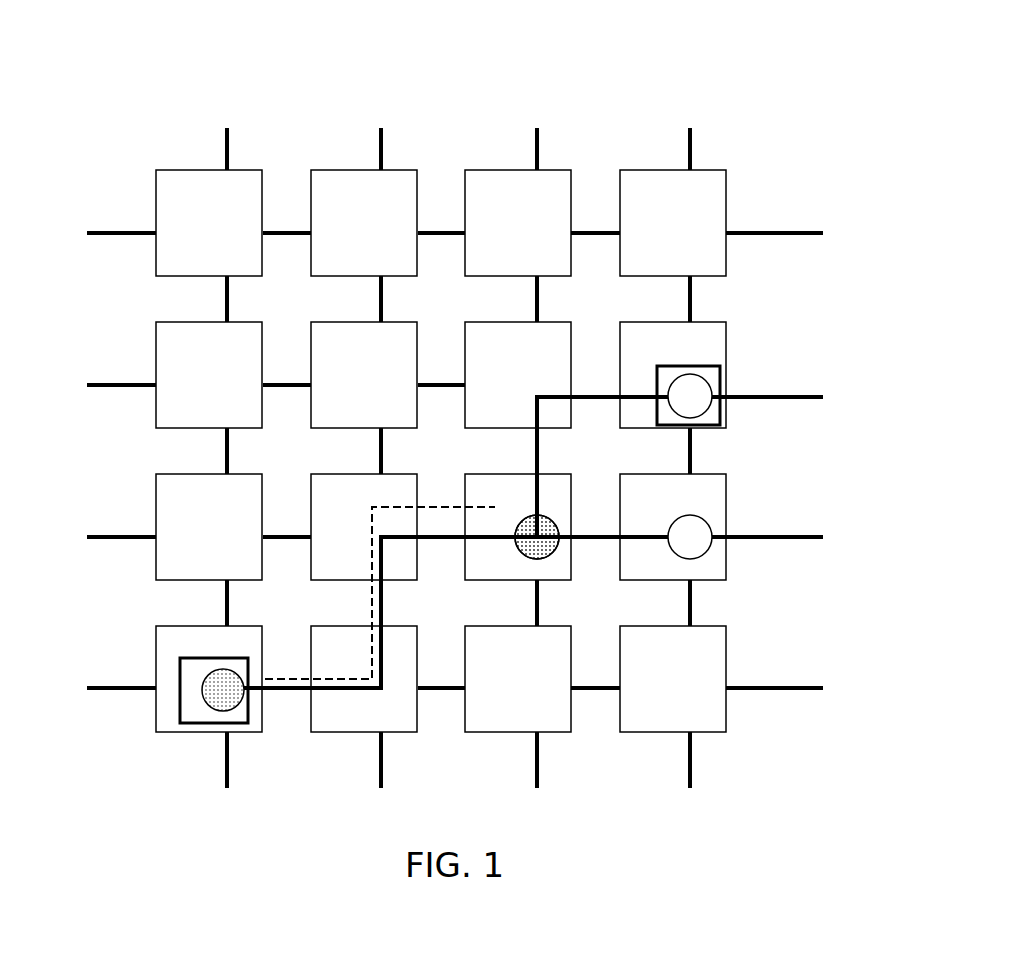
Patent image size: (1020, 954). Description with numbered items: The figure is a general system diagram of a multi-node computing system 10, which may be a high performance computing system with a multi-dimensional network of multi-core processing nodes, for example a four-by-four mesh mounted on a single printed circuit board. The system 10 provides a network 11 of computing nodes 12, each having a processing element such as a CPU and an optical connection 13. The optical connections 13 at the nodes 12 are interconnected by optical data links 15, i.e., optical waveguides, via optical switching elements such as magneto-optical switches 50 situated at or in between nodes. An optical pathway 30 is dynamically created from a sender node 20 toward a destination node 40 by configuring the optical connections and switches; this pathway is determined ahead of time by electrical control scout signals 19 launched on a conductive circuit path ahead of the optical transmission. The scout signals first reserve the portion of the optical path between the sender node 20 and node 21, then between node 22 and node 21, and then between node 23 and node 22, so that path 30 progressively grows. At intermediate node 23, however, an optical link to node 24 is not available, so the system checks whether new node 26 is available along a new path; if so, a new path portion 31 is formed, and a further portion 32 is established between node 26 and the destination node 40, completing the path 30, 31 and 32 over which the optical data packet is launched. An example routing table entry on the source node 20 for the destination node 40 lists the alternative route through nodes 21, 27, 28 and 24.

The multi-node computing system 10 is at (725, 46).
The network 11 is at (298, 158).
The computing node 12 is at (157, 189).
The optical connection 13 is at (187, 724).
The optical data link 15 is at (227, 607).
The electrical control (scout) signal 19 is at (372, 598).
The sender node 20 is at (257, 732).
The node 21 is at (403, 732).
The node 22 is at (330, 474).
The intermediate node 23 is at (553, 474).
The node 24 is at (717, 580).
The new node 26 is at (465, 343).
The node 27 is at (493, 732).
The node 28 is at (727, 718).
The optical pathway 30 is at (440, 539).
The new path portion 31 is at (537, 450).
The optical path portion 32 is at (597, 388).
The destination node 40 is at (727, 415).
The magneto-optical switch 50 is at (543, 561).